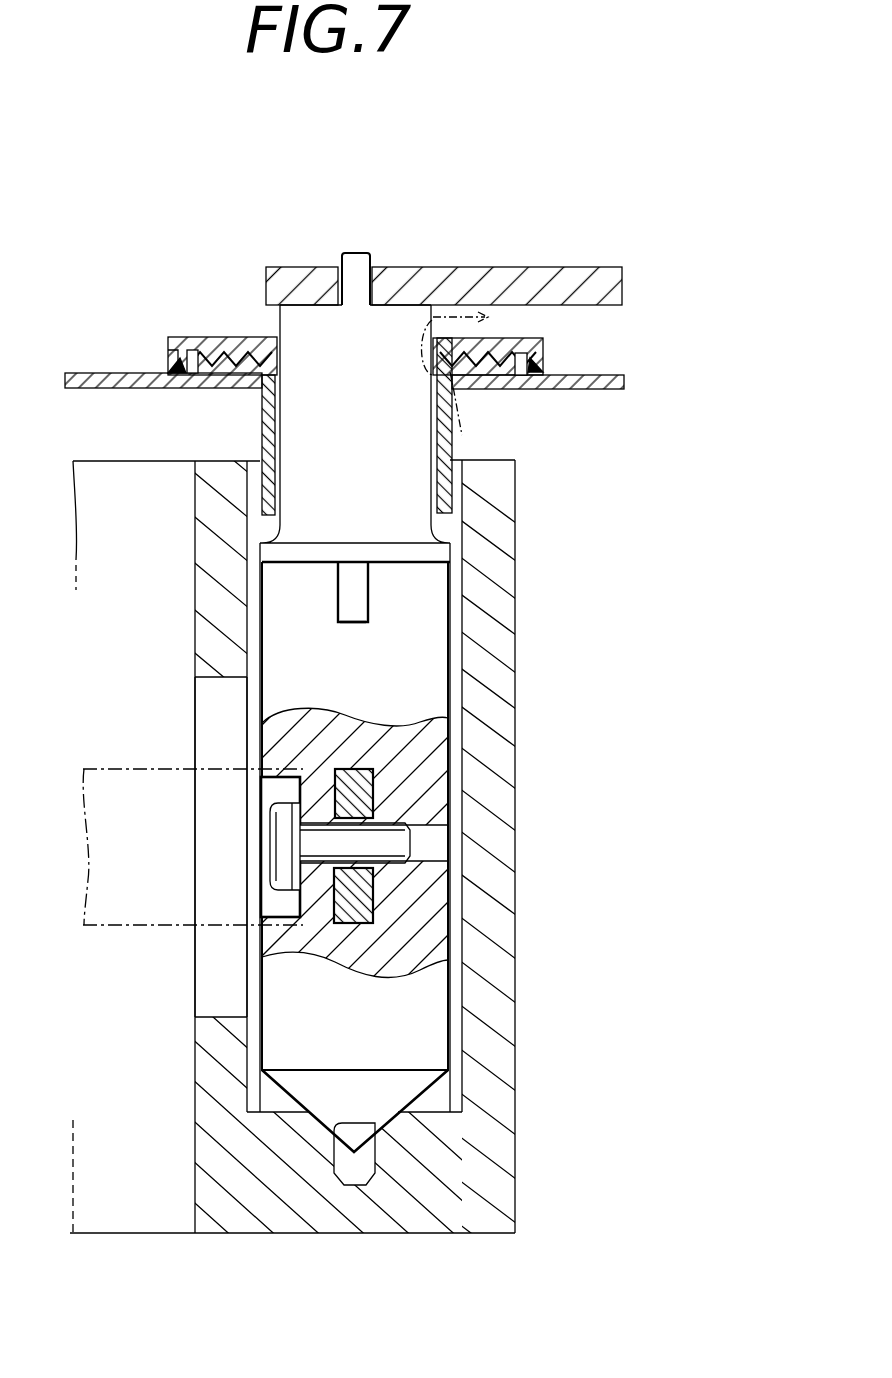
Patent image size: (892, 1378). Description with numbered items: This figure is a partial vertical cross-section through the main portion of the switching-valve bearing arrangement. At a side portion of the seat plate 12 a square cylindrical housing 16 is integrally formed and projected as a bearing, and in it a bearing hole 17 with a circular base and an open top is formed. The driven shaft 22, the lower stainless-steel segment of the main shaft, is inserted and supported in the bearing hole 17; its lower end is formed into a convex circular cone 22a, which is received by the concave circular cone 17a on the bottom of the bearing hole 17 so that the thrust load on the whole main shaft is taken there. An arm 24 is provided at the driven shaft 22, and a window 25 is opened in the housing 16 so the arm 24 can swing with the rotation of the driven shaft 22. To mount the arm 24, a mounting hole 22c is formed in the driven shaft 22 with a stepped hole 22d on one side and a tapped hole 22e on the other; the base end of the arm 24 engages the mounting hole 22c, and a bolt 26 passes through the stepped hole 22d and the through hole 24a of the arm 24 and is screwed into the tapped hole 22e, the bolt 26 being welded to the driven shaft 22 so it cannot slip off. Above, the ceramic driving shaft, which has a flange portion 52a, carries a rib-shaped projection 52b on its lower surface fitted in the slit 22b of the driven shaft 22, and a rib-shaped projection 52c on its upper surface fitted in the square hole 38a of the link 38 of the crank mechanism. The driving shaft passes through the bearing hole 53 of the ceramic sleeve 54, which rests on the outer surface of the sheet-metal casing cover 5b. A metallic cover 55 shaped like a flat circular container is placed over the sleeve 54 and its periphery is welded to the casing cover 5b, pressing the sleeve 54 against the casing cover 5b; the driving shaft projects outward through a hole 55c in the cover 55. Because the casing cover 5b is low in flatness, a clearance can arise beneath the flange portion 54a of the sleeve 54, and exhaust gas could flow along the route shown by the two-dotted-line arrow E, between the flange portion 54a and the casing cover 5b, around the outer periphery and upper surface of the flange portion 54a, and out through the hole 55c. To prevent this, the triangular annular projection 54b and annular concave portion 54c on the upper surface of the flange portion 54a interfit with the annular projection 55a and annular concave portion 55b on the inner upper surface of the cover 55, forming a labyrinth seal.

The casing cover 5b is at (622, 370).
The seat plate 12 is at (128, 1235).
The housing 16 is at (520, 1075).
The bearing hole 17 is at (455, 990).
The concave circular cone 17a is at (347, 1125).
The driven shaft 22 is at (430, 702).
The convex circular cone 22a is at (283, 1092).
The slit 22b is at (358, 612).
The mounting hole 22c is at (375, 800).
The stepped hole 22d is at (270, 822).
The tapped hole 22e is at (415, 850).
The arm 24 is at (375, 905).
The through hole 24a is at (350, 858).
The window 25 is at (205, 1017).
The bolt 26 is at (265, 855).
The link 38 is at (570, 267).
The square hole 38a is at (338, 268).
The flange portion 52a is at (455, 552).
The rib-shaped projection 52b is at (368, 600).
The rib-shaped projection 52c is at (358, 253).
The bearing hole 53 is at (455, 490).
The sleeve 54 is at (452, 445).
The flange portion 54a is at (172, 362).
The annular projection 54b is at (490, 338).
The annular concave portion 54c is at (515, 338).
The cover 55 is at (196, 338).
The annular projection 55a is at (205, 380).
The annular concave portion 55b is at (214, 373).
The hole 55c is at (276, 336).
The arrow E is at (462, 432).